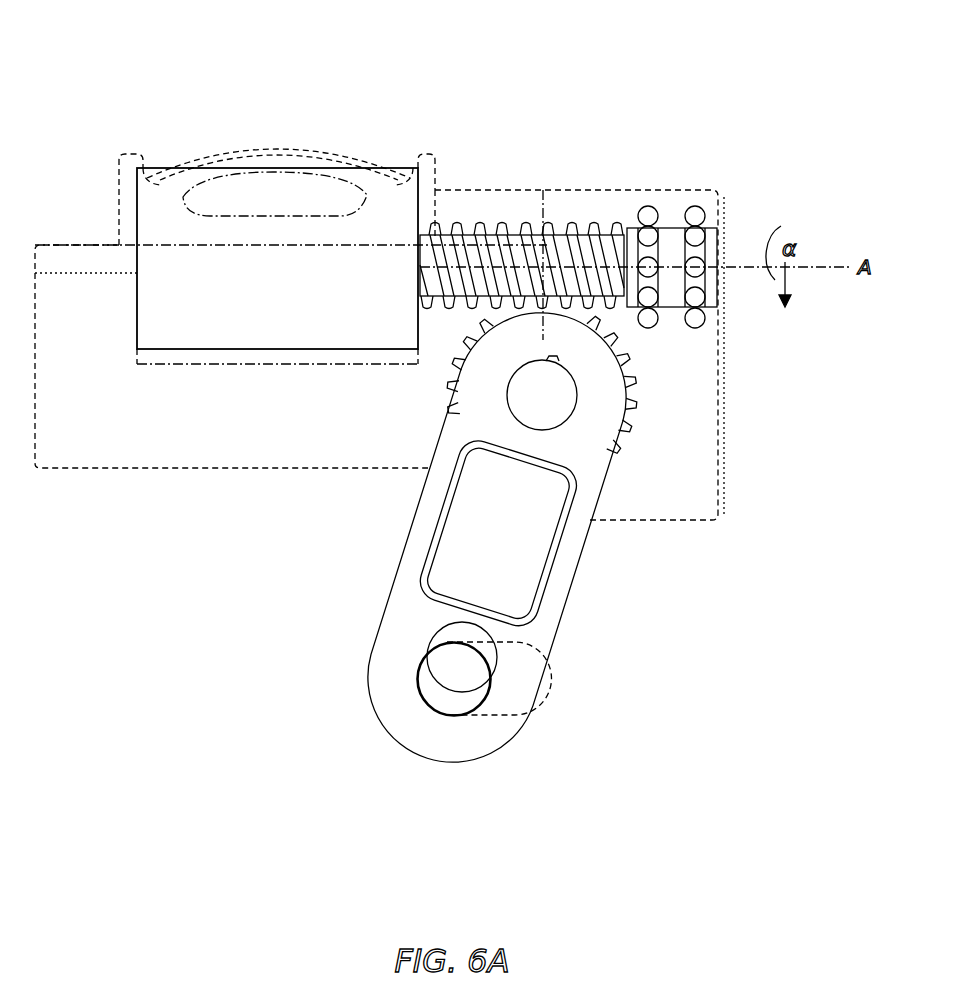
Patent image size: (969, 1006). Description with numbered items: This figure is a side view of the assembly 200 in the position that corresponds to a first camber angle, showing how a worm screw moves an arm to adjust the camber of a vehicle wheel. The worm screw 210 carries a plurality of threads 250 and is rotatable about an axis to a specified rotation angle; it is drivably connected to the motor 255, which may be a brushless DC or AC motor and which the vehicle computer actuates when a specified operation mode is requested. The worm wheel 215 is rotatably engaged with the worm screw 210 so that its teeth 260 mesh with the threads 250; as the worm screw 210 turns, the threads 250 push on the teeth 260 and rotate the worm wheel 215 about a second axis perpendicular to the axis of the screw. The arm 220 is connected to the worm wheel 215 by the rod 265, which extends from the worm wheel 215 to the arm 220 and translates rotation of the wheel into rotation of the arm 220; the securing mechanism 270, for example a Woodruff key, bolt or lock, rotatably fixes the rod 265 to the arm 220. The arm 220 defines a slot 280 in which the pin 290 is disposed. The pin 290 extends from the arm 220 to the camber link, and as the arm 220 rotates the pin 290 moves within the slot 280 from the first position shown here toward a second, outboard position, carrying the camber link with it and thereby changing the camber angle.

The assembly 200 is at (58, 75).
The worm screw 210 is at (425, 225).
The worm wheel 215 is at (630, 405).
The arm 220 is at (515, 548).
The threads 250 is at (435, 222).
The motor 255 is at (278, 188).
The teeth 260 is at (565, 310).
The rod 265 is at (540, 402).
The securing mechanism 270 is at (533, 357).
The slot 280 is at (435, 630).
The pin 290 is at (445, 683).